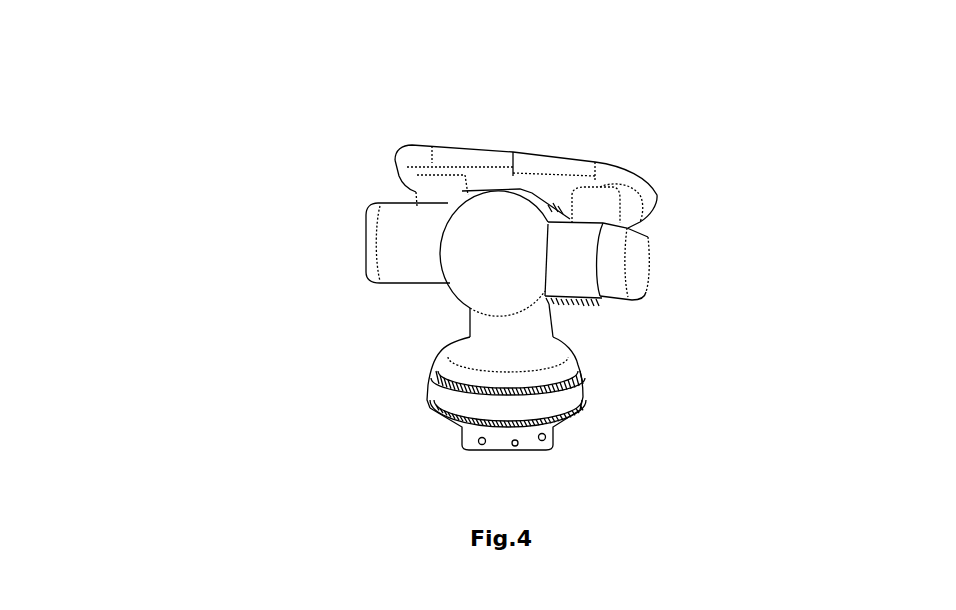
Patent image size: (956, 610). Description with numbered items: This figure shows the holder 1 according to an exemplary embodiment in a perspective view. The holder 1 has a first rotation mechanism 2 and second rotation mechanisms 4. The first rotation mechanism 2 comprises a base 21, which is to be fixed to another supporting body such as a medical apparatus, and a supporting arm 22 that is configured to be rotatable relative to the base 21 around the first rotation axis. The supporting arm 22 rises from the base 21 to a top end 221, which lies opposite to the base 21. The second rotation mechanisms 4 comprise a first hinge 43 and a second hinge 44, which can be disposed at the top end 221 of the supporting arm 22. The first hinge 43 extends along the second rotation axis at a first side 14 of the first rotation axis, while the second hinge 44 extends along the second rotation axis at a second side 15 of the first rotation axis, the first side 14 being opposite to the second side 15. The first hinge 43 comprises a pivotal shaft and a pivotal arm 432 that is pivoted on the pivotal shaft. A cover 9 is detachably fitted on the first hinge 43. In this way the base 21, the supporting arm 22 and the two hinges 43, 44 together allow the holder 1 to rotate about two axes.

The holder 1 is at (336, 169).
The first rotation mechanism 2 is at (530, 355).
The second rotation mechanisms 4 is at (580, 249).
The cover 9 is at (618, 265).
The first side 14 is at (748, 248).
The second side 15 is at (255, 236).
The base 21 is at (447, 403).
The supporting arm 22 is at (485, 332).
The first hinge 43 is at (558, 236).
The second hinge 44 is at (410, 228).
The top end 221 is at (503, 222).
The pivotal arm 432 is at (578, 275).